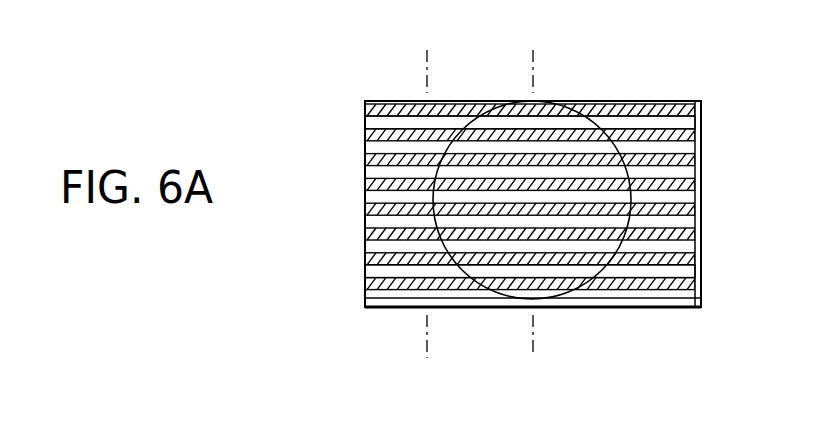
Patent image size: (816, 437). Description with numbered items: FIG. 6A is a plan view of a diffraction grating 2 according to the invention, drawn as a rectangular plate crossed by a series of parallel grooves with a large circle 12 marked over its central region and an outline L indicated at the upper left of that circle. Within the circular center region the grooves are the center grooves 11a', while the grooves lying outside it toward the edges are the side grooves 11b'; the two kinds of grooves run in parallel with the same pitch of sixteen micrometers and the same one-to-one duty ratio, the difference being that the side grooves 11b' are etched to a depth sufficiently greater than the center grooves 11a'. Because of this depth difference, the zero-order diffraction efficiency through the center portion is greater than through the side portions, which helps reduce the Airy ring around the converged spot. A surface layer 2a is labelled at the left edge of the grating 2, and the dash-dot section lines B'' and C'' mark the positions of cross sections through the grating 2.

The diffraction grating 2 is at (285, 273).
The layer (non-hatched layer) 2a is at (365, 122).
The grooves formed in the center portion 11a' is at (526, 231).
The grooves formed in the side portions 11b' is at (525, 316).
The circular region 12 is at (628, 142).
The length L is at (466, 127).
The section line B''- B'' is at (540, 205).
The section line C''- C'' is at (434, 205).